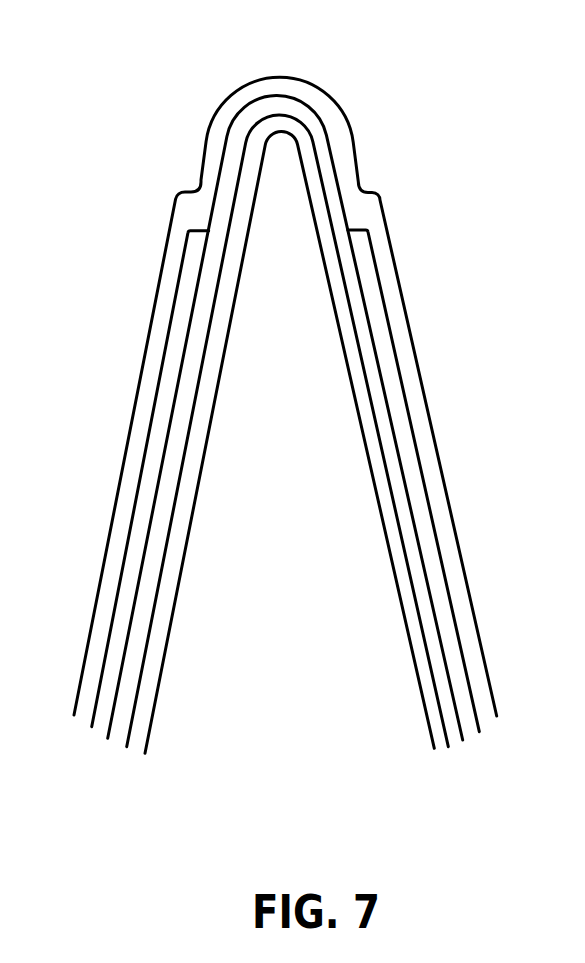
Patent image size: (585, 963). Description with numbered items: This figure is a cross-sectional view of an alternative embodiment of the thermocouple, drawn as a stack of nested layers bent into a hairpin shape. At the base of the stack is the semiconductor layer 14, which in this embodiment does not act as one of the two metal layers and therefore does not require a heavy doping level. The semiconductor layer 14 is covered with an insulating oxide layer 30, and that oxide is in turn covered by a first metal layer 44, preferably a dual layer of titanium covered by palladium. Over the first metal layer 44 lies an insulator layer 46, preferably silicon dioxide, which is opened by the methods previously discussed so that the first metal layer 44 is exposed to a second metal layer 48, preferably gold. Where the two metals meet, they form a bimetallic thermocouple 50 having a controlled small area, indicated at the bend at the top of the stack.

The semiconductor layer 14 is at (302, 638).
The bimetallic thermocouple 50 is at (370, 92).
The second metal layer 48 is at (485, 718).
The insulator layer 46 is at (468, 730).
The first metal layer 44 is at (453, 737).
The insulating oxide layer 30 is at (442, 745).